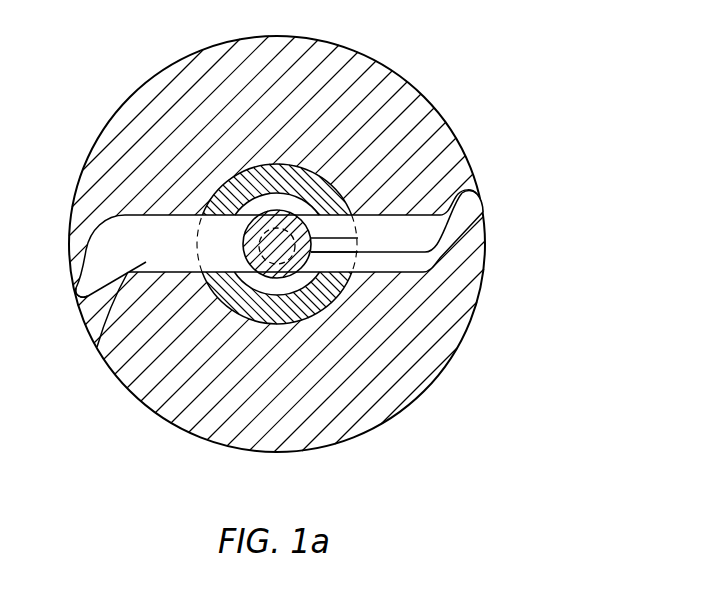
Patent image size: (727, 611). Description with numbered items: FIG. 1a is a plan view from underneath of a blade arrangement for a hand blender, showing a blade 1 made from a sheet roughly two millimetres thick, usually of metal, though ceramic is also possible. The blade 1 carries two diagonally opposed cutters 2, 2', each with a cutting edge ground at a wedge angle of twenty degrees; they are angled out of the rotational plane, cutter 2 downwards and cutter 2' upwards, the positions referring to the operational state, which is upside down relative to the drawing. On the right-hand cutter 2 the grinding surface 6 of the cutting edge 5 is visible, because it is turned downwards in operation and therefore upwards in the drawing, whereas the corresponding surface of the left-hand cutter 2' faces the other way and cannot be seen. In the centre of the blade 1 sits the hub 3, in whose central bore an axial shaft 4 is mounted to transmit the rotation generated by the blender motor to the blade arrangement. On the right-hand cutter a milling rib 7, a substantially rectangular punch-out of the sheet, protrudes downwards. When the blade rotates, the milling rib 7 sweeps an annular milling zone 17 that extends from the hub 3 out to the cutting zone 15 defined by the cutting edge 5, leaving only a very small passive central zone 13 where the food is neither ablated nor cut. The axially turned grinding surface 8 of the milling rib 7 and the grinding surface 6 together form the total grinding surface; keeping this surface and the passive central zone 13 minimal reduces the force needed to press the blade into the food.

The blade 1 is at (288, 250).
The cutter 2 is at (293, 278).
The cutter 2' is at (62, 337).
The hub 3 is at (287, 203).
The axial shaft 4 is at (273, 231).
The cutting edge 5 is at (424, 285).
The grinding surface 6 is at (470, 230).
The milling rib 7 is at (338, 274).
The grinding surface 8 is at (356, 214).
The passive central zone 13 is at (278, 282).
The cutting zone 15 is at (408, 380).
The annular milling zone 17 is at (220, 298).